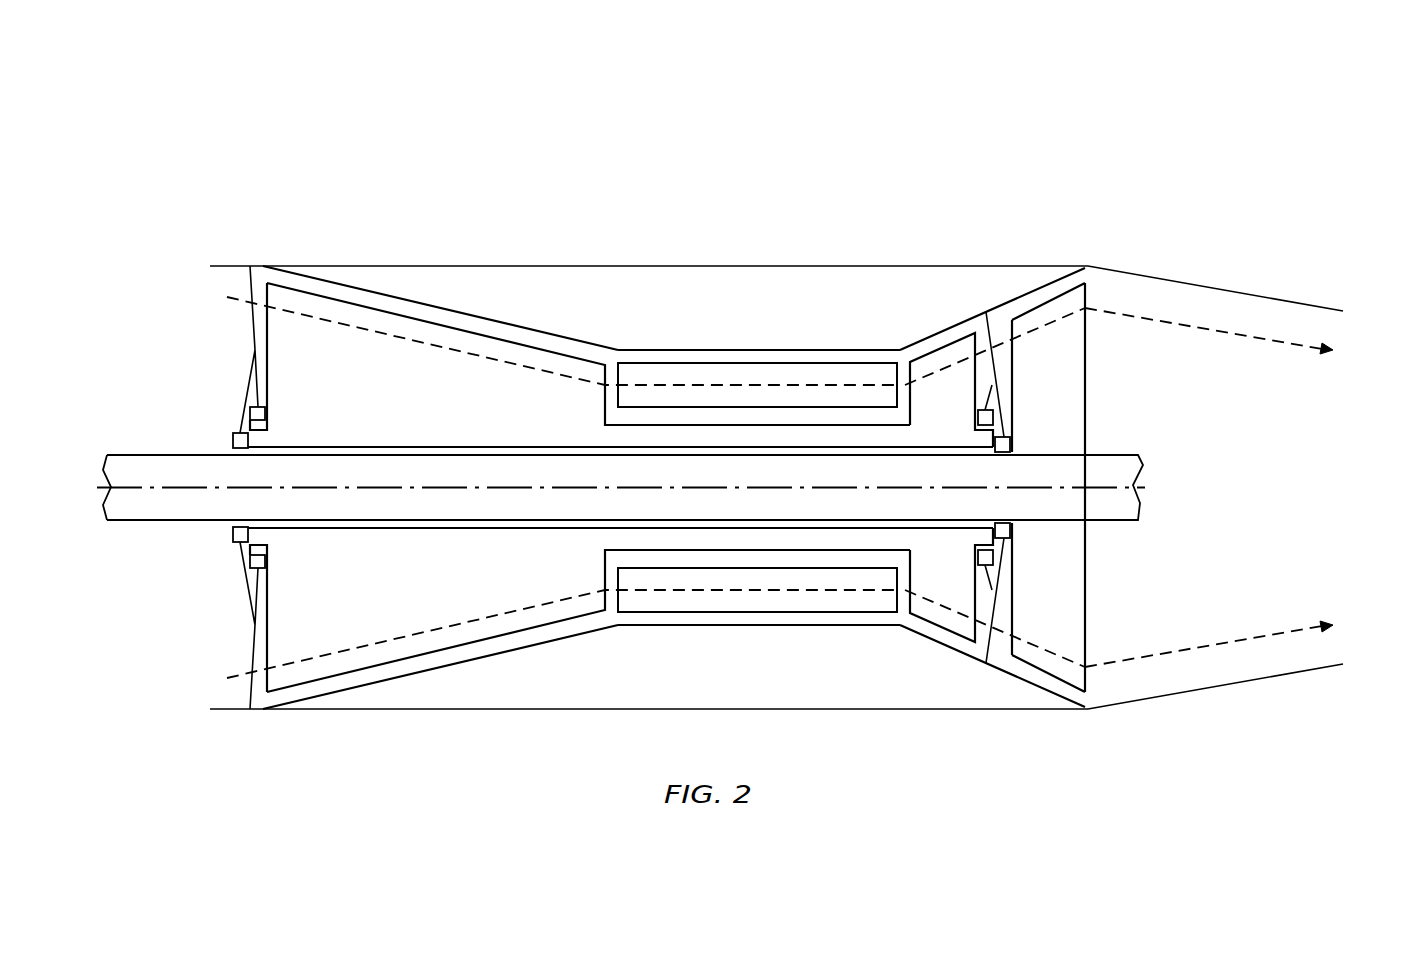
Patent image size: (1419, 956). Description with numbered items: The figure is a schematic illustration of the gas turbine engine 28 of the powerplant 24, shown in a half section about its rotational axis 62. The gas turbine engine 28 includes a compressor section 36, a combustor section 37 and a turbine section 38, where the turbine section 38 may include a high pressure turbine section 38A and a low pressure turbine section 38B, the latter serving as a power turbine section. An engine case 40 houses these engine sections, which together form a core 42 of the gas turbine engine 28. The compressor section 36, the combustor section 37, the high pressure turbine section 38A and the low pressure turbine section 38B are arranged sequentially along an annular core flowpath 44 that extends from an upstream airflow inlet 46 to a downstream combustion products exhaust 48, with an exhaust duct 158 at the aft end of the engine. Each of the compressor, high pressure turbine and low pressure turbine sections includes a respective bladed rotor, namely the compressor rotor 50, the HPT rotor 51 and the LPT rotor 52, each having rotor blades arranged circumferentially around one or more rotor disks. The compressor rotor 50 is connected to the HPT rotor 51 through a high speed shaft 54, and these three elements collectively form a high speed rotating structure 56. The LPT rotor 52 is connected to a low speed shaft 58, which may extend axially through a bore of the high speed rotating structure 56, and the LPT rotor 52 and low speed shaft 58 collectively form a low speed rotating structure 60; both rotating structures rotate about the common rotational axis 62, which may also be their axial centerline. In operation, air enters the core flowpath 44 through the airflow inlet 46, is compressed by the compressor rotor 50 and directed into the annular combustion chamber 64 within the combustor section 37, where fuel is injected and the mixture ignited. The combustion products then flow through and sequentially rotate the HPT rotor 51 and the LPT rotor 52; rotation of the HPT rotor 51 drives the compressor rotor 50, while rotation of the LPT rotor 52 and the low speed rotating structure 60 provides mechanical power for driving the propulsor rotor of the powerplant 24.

The powerplant 24 is at (170, 152).
The gas turbine engine 28 is at (262, 158).
The compressor section 36 is at (445, 312).
The combustor section 37 is at (758, 352).
The turbine section 38 is at (1062, 190).
The high pressure turbine (HPT) section 38A is at (955, 327).
The low pressure turbine (LPT) section 38B is at (1037, 288).
The engine case 40 is at (573, 256).
The core 42 is at (843, 240).
The core flowpath 44 is at (390, 340).
The airflow inlet 46 is at (207, 285).
The combustion products exhaust 48 is at (1333, 330).
The compressor rotor 50 is at (398, 409).
The HPT rotor 51 is at (928, 422).
The LPT rotor 52 is at (1038, 402).
The high speed shaft 54 is at (805, 450).
The high speed rotating structure 56 is at (722, 458).
The low speed shaft 58 is at (170, 452).
The low speed rotating structure 60 is at (164, 535).
The rotational axis 62 is at (1128, 490).
The combustion chamber 64 is at (805, 378).
The exhaust duct 158 is at (1220, 283).